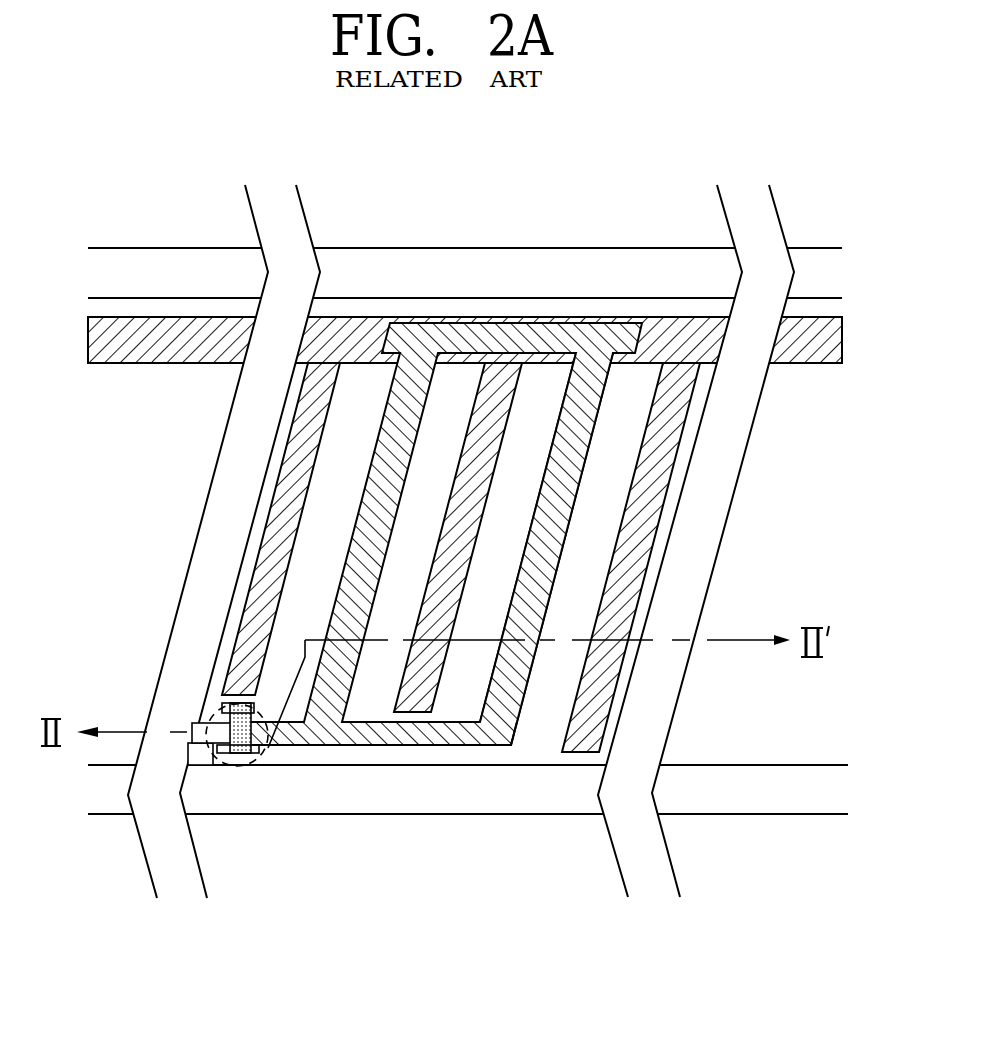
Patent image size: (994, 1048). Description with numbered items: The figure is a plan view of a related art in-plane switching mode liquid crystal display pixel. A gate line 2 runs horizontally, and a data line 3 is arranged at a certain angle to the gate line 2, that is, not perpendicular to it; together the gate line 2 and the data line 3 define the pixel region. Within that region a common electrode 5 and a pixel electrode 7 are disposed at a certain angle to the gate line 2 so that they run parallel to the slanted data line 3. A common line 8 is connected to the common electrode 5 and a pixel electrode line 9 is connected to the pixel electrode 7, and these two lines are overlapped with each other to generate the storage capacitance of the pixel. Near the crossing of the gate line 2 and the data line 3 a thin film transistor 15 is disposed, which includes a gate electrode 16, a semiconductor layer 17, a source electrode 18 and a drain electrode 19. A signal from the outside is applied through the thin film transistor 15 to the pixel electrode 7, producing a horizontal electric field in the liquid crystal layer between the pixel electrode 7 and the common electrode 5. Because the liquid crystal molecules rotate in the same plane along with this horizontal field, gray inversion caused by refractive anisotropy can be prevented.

The gate line 2 is at (710, 802).
The data line 3 is at (752, 430).
The common electrode 5 is at (290, 476).
The pixel electrode 7 is at (560, 526).
The common line 8 is at (432, 317).
The pixel electrode line 9 is at (520, 323).
The thin film transistor 15 is at (186, 768).
The gate electrode 16 is at (200, 752).
The semiconductor layer 17 is at (222, 707).
The source electrode 18 is at (200, 725).
The drain electrode 19 is at (258, 770).